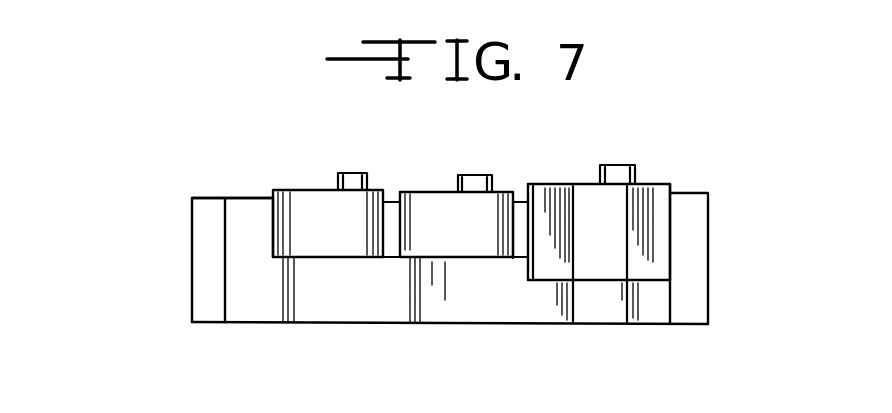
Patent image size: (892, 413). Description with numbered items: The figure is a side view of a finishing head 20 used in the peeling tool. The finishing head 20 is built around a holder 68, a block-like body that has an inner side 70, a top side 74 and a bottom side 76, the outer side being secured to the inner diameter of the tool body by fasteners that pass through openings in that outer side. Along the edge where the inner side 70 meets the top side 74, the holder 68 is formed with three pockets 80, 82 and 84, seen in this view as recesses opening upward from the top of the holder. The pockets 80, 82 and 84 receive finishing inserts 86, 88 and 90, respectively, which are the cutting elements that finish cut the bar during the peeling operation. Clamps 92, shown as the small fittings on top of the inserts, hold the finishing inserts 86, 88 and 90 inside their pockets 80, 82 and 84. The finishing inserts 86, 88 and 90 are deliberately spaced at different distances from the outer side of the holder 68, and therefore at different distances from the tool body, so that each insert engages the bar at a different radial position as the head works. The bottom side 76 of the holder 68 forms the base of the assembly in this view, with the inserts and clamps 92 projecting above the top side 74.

The finishing head 20 is at (162, 226).
The holder 68 is at (237, 233).
The top side 74 is at (243, 197).
The finishing insert 86 is at (302, 208).
The finishing insert 88 is at (432, 208).
The finishing insert 90 is at (655, 195).
The clamp 92 is at (353, 175).
The pocket 84 is at (668, 238).
The pocket 80 is at (273, 236).
The bottom side 76 is at (375, 325).
The inner side 70 is at (453, 307).
The pocket 82 is at (512, 237).